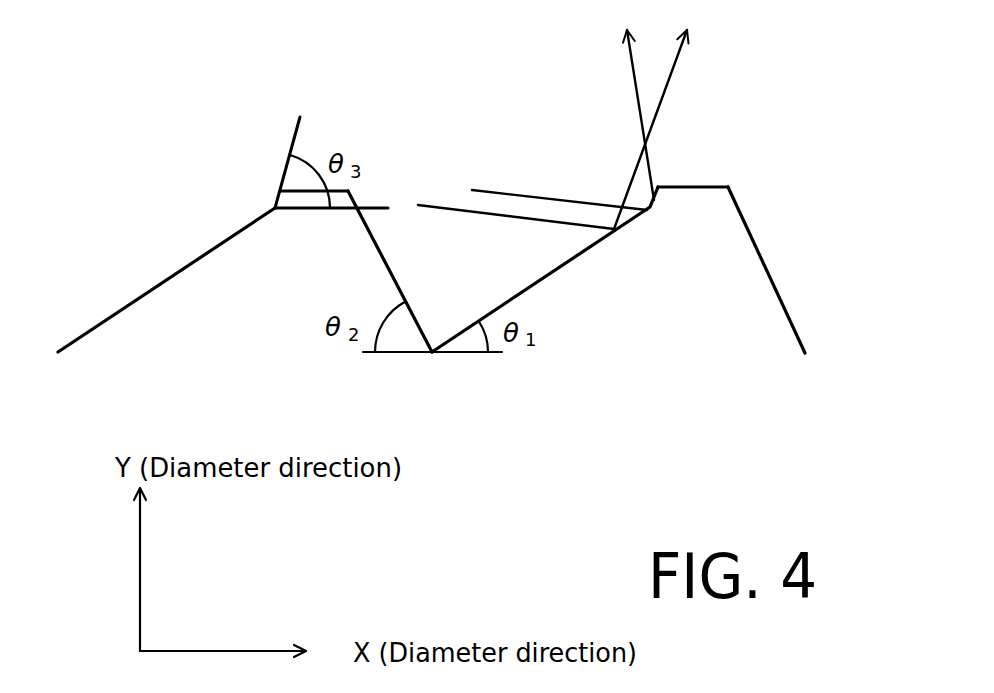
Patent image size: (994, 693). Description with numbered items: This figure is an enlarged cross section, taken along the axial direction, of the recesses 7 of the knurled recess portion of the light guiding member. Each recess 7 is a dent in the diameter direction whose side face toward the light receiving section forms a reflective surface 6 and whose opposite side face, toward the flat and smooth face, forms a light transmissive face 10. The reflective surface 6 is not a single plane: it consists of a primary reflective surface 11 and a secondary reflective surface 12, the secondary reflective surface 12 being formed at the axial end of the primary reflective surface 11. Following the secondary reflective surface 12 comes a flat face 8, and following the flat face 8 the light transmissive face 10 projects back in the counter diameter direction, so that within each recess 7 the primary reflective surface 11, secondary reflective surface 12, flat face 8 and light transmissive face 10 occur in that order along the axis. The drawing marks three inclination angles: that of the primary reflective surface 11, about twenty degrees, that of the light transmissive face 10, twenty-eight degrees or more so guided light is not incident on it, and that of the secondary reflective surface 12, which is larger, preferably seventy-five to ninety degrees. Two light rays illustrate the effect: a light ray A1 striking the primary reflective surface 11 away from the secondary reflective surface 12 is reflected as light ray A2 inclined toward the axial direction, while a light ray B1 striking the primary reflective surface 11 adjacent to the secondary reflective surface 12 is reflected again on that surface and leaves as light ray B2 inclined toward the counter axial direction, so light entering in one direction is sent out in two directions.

The reflective surface 6 is at (223, 247).
The recess 7 is at (644, 285).
The flat face 8 is at (712, 185).
The light transmissive face 10 is at (785, 305).
The primary reflective surface 11 is at (173, 275).
The secondary reflective surface 12 is at (273, 201).
The light ray A1 is at (500, 217).
The light ray A2 is at (670, 88).
The light ray B1 is at (505, 192).
The light ray B2 is at (637, 90).